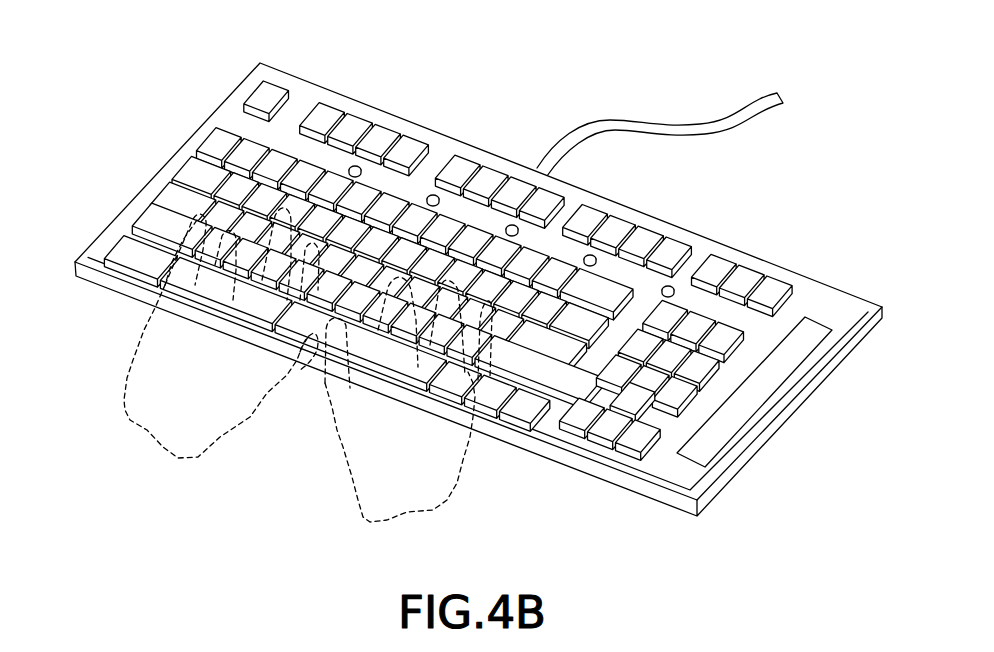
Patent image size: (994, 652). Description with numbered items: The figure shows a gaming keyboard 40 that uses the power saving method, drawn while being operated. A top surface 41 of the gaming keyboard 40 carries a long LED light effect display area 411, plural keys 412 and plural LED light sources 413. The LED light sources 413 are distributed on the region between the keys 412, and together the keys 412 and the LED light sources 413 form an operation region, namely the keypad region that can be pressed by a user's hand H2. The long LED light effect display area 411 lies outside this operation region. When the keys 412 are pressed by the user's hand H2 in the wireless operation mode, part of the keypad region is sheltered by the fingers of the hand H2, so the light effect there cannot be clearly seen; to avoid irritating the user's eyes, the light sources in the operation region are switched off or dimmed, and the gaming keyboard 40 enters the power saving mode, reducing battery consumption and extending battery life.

The gaming keyboard 40 is at (820, 380).
The top surface 41 is at (746, 260).
The long LED light effect display area 411 is at (748, 403).
The keys 412 is at (312, 214).
The LED light sources 413 is at (453, 160).
The user's hand H2 is at (150, 363).